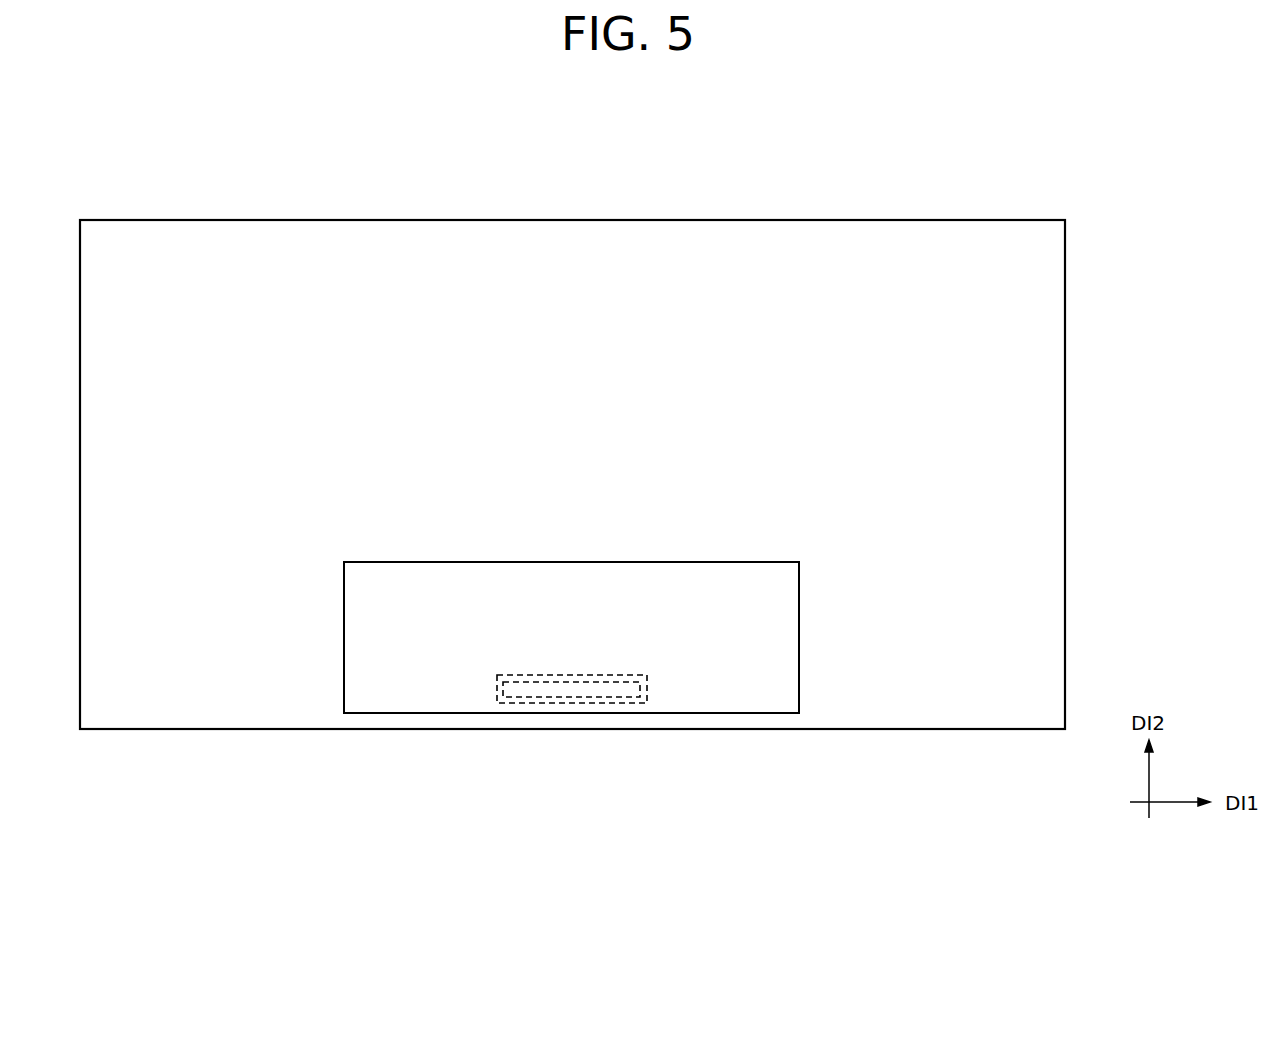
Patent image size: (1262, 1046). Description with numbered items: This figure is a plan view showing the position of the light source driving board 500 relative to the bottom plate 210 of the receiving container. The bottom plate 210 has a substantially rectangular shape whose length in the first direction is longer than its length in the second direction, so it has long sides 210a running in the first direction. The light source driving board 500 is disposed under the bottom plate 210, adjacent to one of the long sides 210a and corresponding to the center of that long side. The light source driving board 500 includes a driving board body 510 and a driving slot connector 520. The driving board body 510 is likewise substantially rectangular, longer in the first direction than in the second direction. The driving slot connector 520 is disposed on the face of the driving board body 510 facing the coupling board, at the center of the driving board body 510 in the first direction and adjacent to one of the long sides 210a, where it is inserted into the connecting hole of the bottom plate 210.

The bottom plate 210 is at (187, 715).
The long sides 210a is at (293, 729).
The light source driving board 500 is at (571, 702).
The driving board body 510 is at (435, 705).
The driving slot connector 520 is at (572, 739).